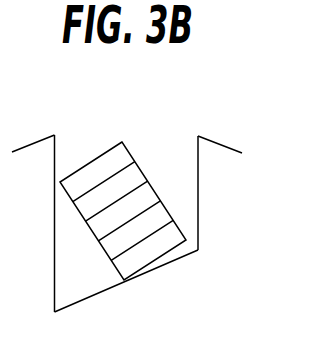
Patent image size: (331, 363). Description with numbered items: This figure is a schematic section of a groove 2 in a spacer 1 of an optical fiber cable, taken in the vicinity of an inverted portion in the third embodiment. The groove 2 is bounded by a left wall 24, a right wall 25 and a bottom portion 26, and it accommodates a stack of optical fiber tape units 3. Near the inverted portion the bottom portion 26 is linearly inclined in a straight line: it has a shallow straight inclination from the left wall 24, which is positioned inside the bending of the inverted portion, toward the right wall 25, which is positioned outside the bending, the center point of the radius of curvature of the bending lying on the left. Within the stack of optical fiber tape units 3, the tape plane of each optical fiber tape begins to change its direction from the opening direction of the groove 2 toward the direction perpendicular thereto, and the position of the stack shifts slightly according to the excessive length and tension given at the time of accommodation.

The spacer 1 is at (128, 215).
The groove 2 is at (123, 184).
The stack of optical fiber tape units 3 is at (146, 172).
The left wall 24 is at (57, 190).
The right wall 25 is at (198, 227).
The bottom portion 26 is at (112, 288).